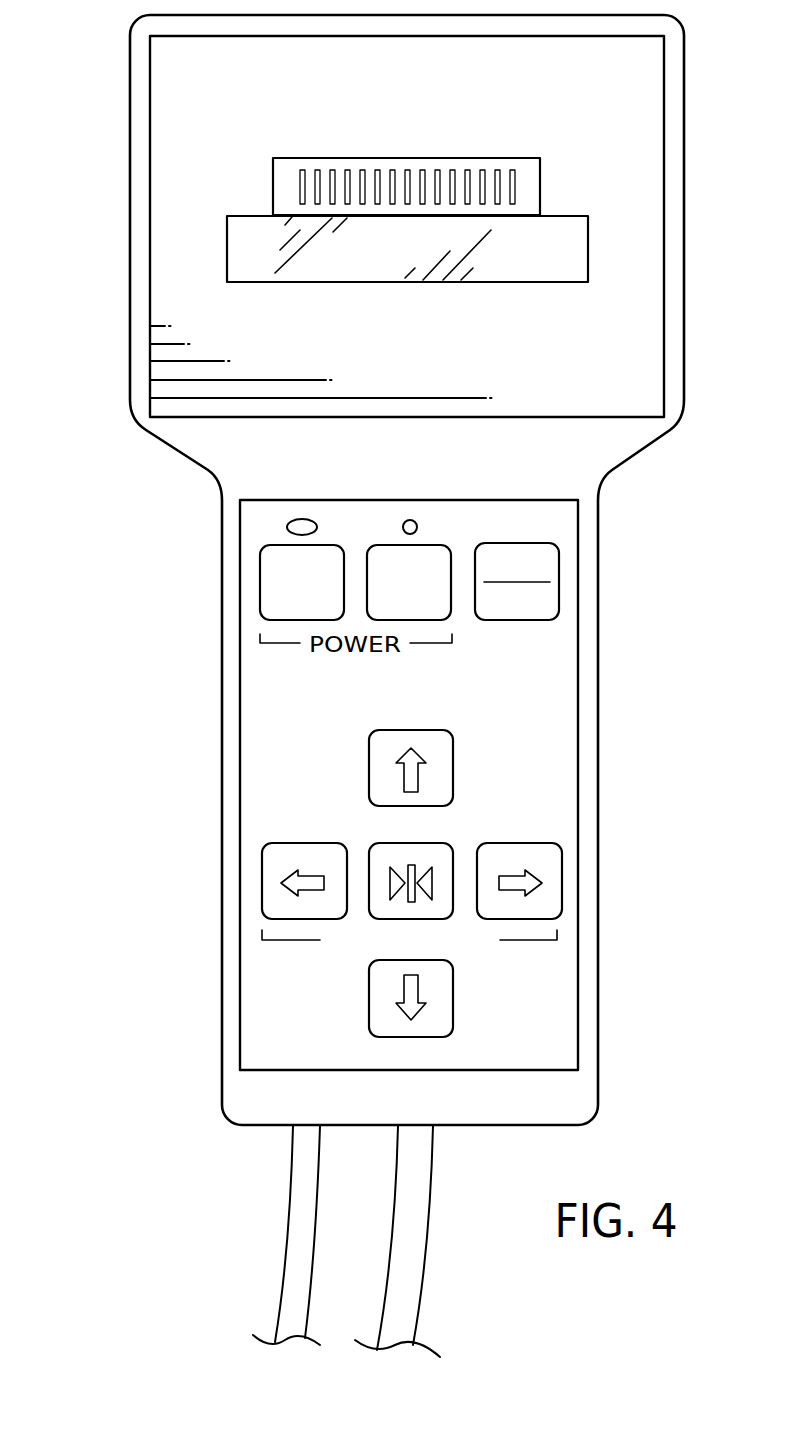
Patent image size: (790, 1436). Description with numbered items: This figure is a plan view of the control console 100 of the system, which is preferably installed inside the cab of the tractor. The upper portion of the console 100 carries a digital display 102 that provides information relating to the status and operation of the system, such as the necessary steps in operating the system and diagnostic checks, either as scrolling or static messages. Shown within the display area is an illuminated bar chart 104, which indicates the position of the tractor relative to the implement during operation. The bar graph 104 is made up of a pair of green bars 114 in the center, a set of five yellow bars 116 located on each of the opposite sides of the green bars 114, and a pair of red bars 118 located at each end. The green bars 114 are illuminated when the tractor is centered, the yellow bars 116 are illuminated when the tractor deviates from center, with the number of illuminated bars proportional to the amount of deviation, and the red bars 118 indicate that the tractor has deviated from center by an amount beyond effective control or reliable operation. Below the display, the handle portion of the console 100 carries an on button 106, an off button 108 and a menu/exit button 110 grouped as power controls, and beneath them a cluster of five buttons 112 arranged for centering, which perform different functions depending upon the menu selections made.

The control console 100 is at (73, 98).
The digital display 102 is at (495, 282).
The illuminated bar chart 104 is at (433, 137).
The on button 106 is at (278, 563).
The off button 108 is at (432, 558).
The menu/exit button 110 is at (550, 602).
The cluster of five buttons 112 is at (522, 789).
The green bars 114 is at (420, 156).
The yellow bars 116 is at (388, 156).
The red bars 118 is at (322, 156).